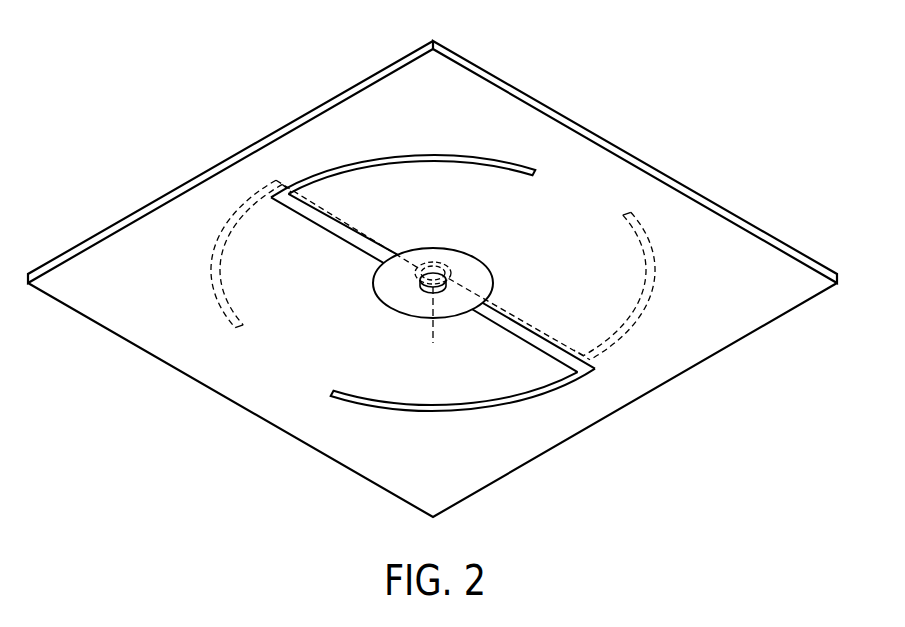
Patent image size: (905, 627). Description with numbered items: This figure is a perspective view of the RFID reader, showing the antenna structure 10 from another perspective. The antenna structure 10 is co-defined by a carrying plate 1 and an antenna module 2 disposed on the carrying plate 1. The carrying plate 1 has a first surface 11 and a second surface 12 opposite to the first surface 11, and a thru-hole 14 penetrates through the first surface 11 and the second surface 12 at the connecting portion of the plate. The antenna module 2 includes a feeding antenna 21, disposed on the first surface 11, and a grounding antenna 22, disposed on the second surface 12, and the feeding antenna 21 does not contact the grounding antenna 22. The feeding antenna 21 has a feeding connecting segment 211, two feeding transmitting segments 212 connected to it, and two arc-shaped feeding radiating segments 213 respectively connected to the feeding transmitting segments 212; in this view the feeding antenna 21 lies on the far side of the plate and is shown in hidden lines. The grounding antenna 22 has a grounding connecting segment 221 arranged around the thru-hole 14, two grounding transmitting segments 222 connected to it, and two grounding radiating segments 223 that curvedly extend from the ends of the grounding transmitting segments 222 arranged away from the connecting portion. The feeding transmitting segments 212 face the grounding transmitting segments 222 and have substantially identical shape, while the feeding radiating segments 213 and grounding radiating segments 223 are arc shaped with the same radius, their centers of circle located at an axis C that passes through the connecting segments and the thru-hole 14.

The antenna structure 10 is at (226, 142).
The carrying plate 1 is at (783, 312).
The first surface 11 is at (737, 210).
The second surface 12 is at (718, 322).
The thru-hole 14 is at (440, 289).
The antenna module 2 is at (680, 428).
The feeding antenna 21 is at (630, 340).
The feeding connecting segment 211 is at (452, 265).
The feeding transmitting segments 212 is at (358, 230).
The feeding radiating segments 213 is at (212, 273).
The grounding antenna 22 is at (535, 401).
The grounding connecting segment 221 is at (398, 300).
The grounding transmitting segments 222 is at (313, 211).
The grounding radiating segments 223 is at (437, 156).
The axis C is at (427, 333).